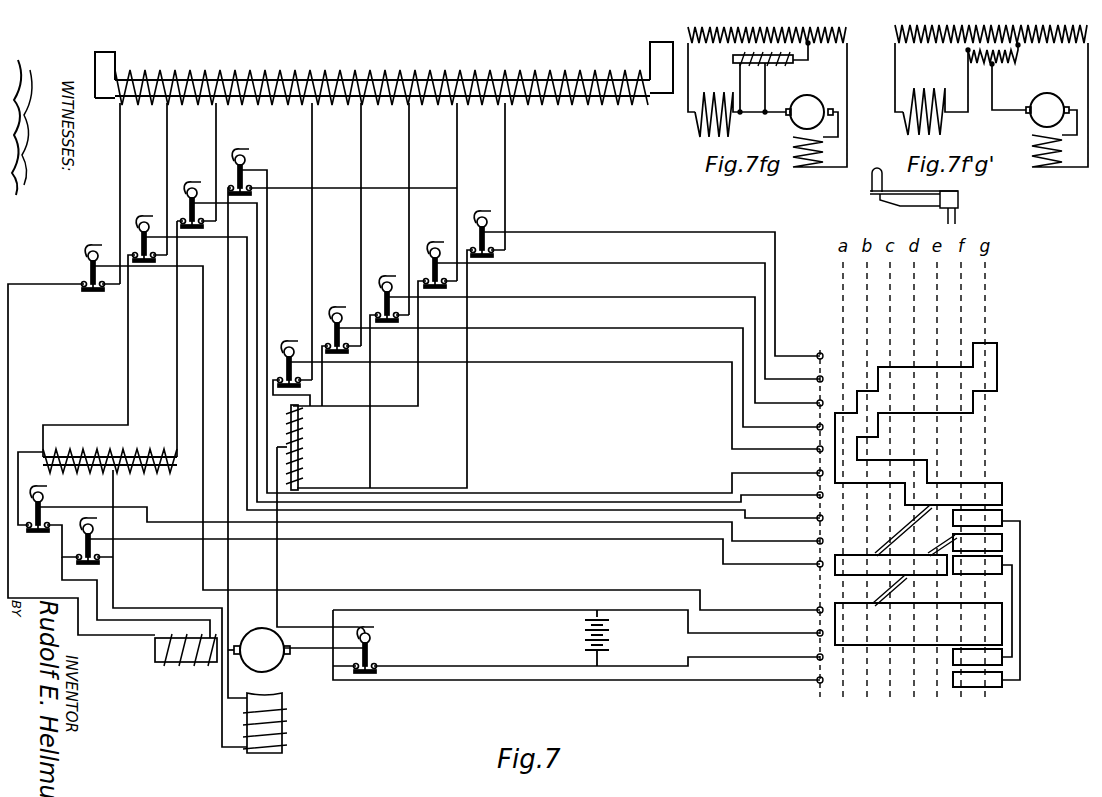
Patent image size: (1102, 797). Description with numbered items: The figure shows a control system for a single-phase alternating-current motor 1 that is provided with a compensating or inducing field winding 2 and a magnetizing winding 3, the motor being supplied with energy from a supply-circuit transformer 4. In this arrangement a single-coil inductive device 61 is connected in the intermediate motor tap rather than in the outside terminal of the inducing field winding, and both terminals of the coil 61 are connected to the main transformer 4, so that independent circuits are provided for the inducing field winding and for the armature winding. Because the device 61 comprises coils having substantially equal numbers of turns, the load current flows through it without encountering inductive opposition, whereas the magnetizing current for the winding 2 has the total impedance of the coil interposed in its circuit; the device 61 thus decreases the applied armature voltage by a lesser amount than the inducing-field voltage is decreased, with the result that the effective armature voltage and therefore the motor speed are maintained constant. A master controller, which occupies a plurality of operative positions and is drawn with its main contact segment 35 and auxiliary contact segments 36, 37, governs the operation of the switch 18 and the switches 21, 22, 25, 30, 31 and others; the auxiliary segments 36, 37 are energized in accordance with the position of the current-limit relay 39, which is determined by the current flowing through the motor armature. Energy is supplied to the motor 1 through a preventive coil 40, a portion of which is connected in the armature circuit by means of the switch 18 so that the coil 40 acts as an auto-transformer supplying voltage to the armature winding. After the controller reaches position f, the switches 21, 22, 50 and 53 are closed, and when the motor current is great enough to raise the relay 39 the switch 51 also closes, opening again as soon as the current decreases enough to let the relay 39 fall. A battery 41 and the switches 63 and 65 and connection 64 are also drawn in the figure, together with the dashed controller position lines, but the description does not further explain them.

In FIG. 7, the motor 1 is at (259, 637).
In FIG. 7, the compensating or inducing field winding 2 is at (182, 668).
In FIG. 7, the magnetizing winding 3 is at (285, 727).
In FIG. 7, the supply-circuit transformer 4 is at (354, 68).
In FIG. 7, the switch 18 is at (250, 160).
In FIG. 7, the switch 21 is at (290, 341).
In FIG. 7, the switch 22 is at (338, 307).
In FIG. 7, the switch 25 is at (388, 276).
In FIG. 7, the switch 30 is at (437, 243).
In FIG. 7, the switch 31 is at (483, 211).
In FIG. 7, the main contact segment 35 is at (997, 372).
In FIG. 7, the auxiliary contact segment 36 is at (953, 660).
In FIG. 7, the auxiliary contact segment 37 is at (953, 681).
In FIG. 7, the low-current-limit relay 39 is at (371, 638).
In FIG. 7, the preventive coil 40 is at (306, 447).
In FIG. 7, the battery 41 is at (582, 638).
In FIG. 7, the switch 50 is at (85, 262).
In FIG. 7, the switch 51 is at (84, 525).
In FIG. 7, the switch 53 is at (191, 181).
In FIG. 7, the single-coil inductive device 61 is at (154, 455).
In FIG. 7, the switch 63 is at (48, 496).
In FIG. 7, the resistor connection 64 is at (177, 352).
In FIG. 7fg, the resistor connection 64 is at (805, 57).
In FIG. 7f'g', the resistor connection 64 is at (1019, 57).
In FIG. 7, the switch 65 is at (146, 215).